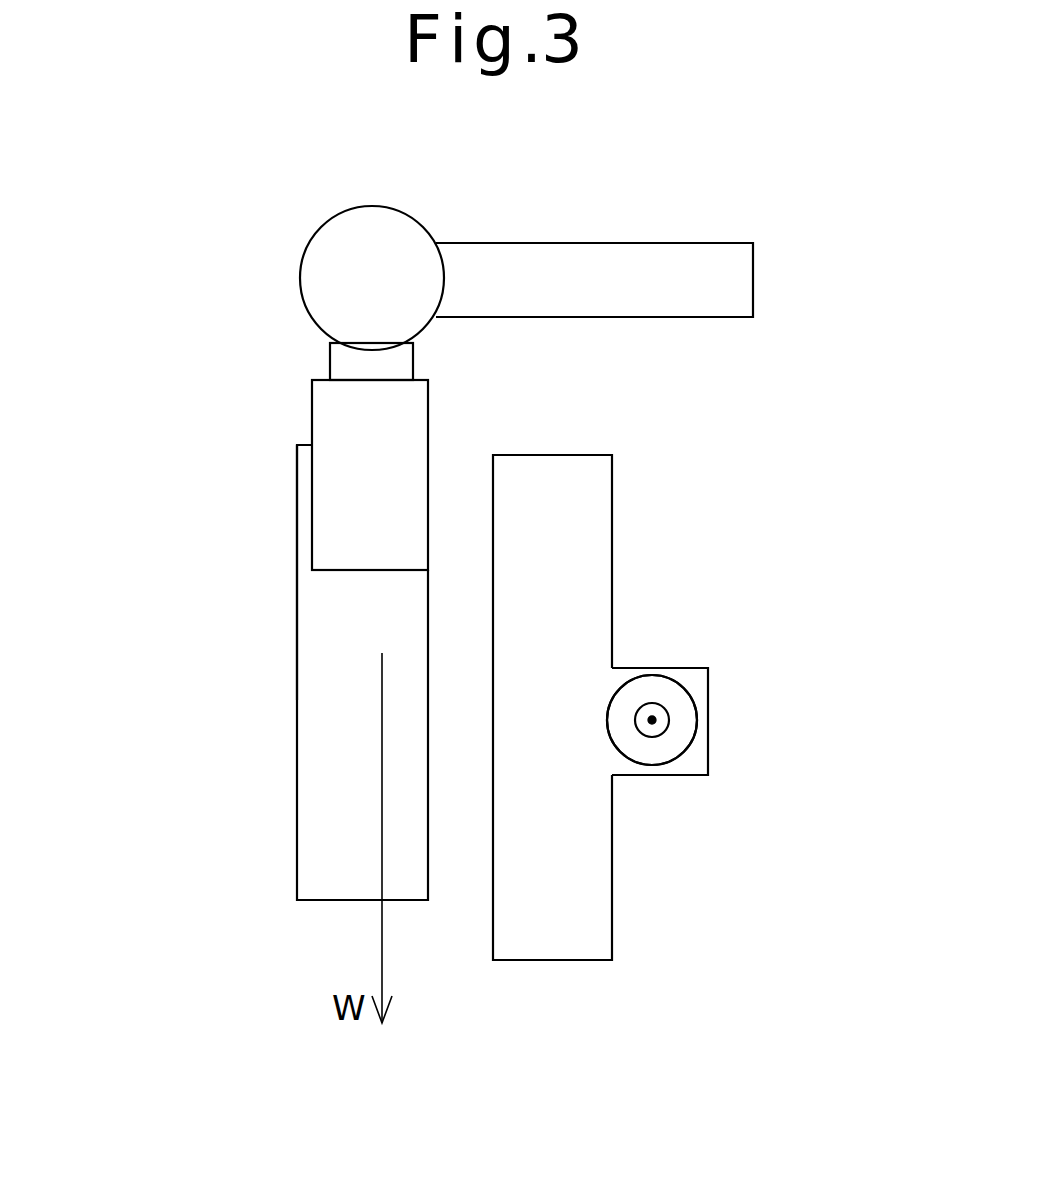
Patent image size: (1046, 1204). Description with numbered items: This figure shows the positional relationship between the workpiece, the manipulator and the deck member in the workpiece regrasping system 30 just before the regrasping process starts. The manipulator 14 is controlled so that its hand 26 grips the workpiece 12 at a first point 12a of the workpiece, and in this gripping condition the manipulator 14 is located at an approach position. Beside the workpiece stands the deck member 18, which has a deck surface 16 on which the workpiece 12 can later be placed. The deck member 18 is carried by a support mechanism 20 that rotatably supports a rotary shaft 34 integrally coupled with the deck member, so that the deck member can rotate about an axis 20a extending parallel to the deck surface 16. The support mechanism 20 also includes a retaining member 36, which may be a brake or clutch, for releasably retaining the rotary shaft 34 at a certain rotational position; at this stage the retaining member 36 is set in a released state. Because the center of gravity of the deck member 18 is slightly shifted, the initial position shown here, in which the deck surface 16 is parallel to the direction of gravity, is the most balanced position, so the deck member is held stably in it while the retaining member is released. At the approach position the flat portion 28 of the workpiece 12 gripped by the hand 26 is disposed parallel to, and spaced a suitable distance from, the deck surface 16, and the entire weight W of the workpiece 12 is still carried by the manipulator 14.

The workpiece 12 is at (272, 857).
The first point of the workpiece 12a is at (305, 518).
The manipulator 14 is at (614, 225).
The deck surface 16 is at (493, 813).
The deck member 18 is at (638, 912).
The support mechanism 20 is at (810, 905).
The axis 20a is at (652, 718).
The hand 26 is at (325, 413).
The flat portion of the workpiece 28 is at (430, 682).
The workpiece regrasping system 30 is at (162, 225).
The rotary shaft 34 is at (664, 727).
The retaining member 36 is at (689, 694).